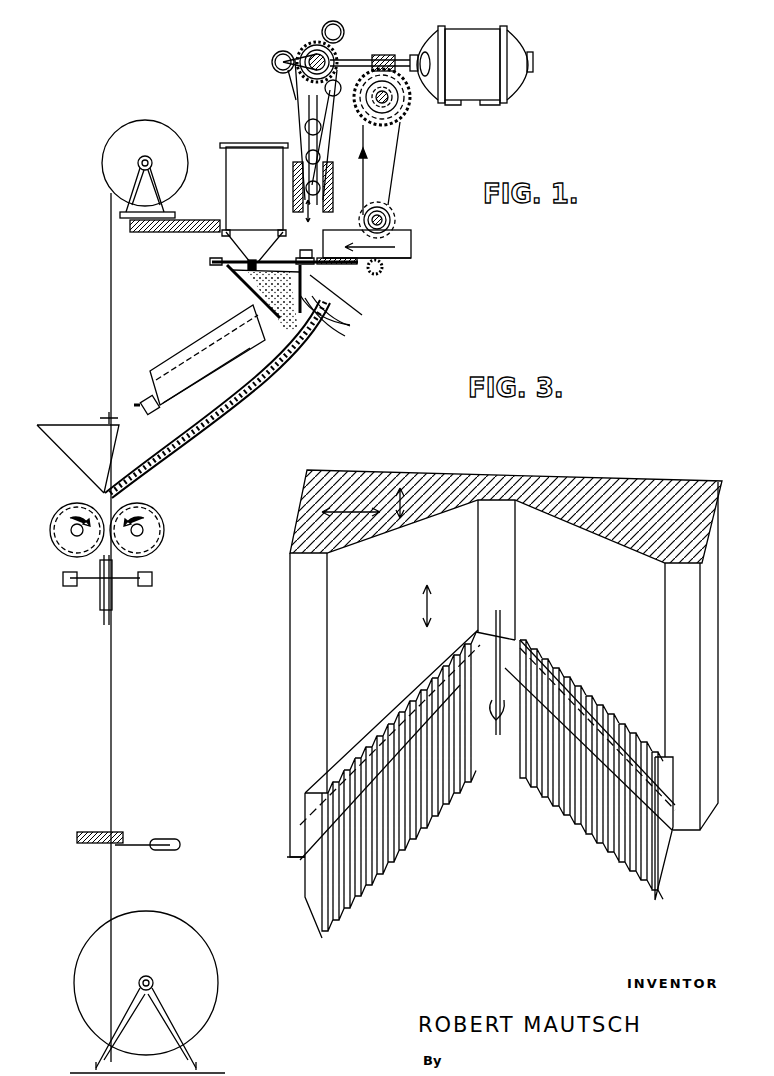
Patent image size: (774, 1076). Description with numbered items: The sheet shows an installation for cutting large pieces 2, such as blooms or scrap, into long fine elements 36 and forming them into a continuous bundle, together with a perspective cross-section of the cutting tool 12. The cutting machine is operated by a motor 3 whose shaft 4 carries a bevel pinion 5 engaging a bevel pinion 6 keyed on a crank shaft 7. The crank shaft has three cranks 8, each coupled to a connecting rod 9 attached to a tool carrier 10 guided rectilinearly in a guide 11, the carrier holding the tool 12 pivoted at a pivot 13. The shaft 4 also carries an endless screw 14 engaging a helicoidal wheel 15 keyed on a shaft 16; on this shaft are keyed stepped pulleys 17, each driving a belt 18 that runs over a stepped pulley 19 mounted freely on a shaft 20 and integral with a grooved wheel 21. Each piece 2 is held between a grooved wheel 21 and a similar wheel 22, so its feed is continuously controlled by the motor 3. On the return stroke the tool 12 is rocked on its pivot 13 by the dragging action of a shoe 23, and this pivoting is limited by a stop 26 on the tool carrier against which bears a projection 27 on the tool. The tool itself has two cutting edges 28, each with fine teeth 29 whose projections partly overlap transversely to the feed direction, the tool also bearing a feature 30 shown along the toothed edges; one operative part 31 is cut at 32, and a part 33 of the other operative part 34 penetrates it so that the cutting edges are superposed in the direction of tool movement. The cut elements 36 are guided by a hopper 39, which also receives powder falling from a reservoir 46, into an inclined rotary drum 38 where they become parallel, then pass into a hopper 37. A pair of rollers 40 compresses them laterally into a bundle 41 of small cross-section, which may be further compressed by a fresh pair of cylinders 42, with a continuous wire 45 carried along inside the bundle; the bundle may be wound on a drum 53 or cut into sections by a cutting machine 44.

In FIG. 1, the piece to be cut up 2 is at (400, 257).
In FIG. 1, the motor 3 is at (470, 87).
In FIG. 1, the shaft 4 is at (408, 52).
In FIG. 1, the bevel pinion 5 is at (332, 50).
In FIG. 1, the bevel pinion 6 is at (305, 56).
In FIG. 1, the crank shaft 7 is at (290, 55).
In FIG. 1, the crank 8 is at (328, 24).
In FIG. 1, the connecting rod 9 is at (299, 108).
In FIG. 1, the tool carrier 10 is at (334, 195).
In FIG. 1, the guide 11 is at (330, 170).
In FIG. 1, the tool 12 is at (310, 273).
In FIG. 3, the tool 12 is at (370, 495).
In FIG. 1, the pivot 13 is at (325, 232).
In FIG. 1, the endless screw 14 is at (385, 54).
In FIG. 1, the helicoidal wheel 15 is at (395, 110).
In FIG. 1, the shaft 16 is at (400, 104).
In FIG. 1, the stepped pulley 17 is at (402, 98).
In FIG. 1, the belt 18 is at (395, 162).
In FIG. 1, the stepped pulley 19 is at (396, 218).
In FIG. 1, the shaft 20 is at (392, 228).
In FIG. 1, the grooved wheel 21 is at (378, 210).
In FIG. 1, the grooved wheel 22 is at (380, 275).
In FIG. 1, the shoe 23 is at (347, 297).
In FIG. 1, the stop 26 is at (296, 245).
In FIG. 1, the projection 27 is at (297, 256).
In FIG. 3, the cutting edge 28 is at (375, 878).
In FIG. 3, the tooth 29 is at (345, 895).
In FIG. 3, the fin top edge 30 is at (382, 733).
In FIG. 3, the operative part 31 is at (290, 885).
In FIG. 3, the cut 32 is at (498, 740).
In FIG. 3, the part 33 is at (508, 720).
In FIG. 3, the operative part 34 is at (675, 852).
In FIG. 1, the long and fine element 36 is at (333, 322).
In FIG. 1, the hopper 37 is at (150, 465).
In FIG. 1, the inclined rotary drum 38 is at (232, 400).
In FIG. 1, the hopper 39 is at (341, 314).
In FIG. 1, the rollers 40 is at (58, 523).
In FIG. 1, the bundle 41 is at (95, 560).
In FIG. 1, the pair of cylinders 42 is at (110, 600).
In FIG. 1, the cutting machine 44 is at (112, 848).
In FIG. 1, the continuous wire 45 is at (110, 352).
In FIG. 1, the reservoir 46 is at (233, 252).
In FIG. 1, the drum 53 is at (183, 937).